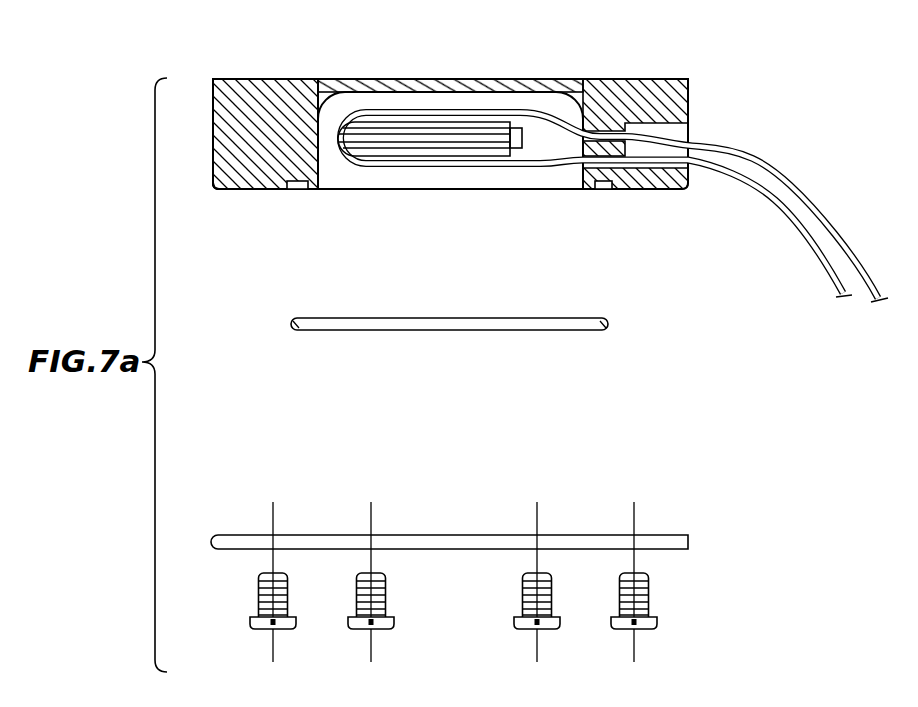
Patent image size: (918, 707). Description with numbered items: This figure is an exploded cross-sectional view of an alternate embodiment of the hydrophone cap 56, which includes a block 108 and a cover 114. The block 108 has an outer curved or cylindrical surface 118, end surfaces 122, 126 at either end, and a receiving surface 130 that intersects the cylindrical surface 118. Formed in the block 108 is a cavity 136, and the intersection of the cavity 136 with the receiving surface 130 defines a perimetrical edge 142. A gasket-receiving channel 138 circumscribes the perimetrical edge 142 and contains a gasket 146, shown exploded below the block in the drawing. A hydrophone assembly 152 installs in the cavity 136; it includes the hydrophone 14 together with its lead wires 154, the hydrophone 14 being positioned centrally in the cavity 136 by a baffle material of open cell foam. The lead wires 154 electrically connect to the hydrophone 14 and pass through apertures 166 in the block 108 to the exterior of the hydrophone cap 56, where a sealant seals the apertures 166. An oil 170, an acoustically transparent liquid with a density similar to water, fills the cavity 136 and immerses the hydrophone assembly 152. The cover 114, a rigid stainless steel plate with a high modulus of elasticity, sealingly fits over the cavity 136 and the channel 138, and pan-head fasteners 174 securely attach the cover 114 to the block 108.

The hydrophone 14 is at (378, 110).
The hydrophone cap 56 is at (233, 684).
The block 108 is at (690, 79).
The cover 114 is at (690, 537).
The cylindrical surface 118 is at (253, 79).
The end surface 122 is at (690, 100).
The end surface 126 is at (212, 155).
The receiving surface 130 is at (247, 190).
The cavity 136 is at (450, 178).
The gasket-receiving channel 138 is at (300, 192).
The perimetrical edge 142 is at (553, 190).
The gasket 146 is at (608, 330).
The hydrophone assembly 152 is at (372, 178).
The lead wires 154 is at (790, 180).
The apertures 166 is at (597, 110).
The oil 170 is at (473, 92).
The pan-head fasteners 174 is at (655, 622).